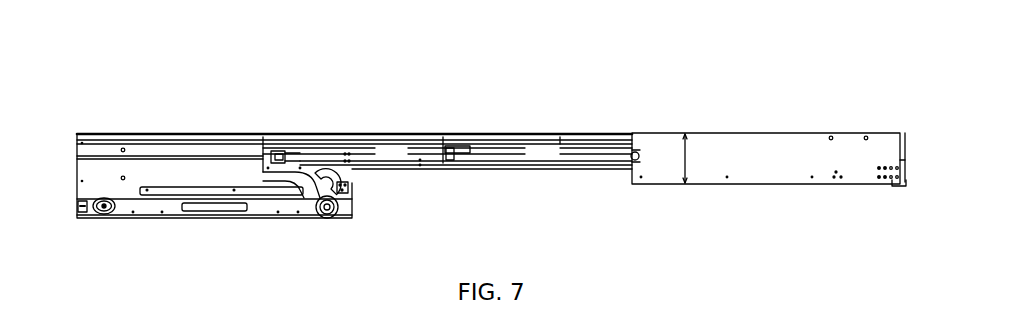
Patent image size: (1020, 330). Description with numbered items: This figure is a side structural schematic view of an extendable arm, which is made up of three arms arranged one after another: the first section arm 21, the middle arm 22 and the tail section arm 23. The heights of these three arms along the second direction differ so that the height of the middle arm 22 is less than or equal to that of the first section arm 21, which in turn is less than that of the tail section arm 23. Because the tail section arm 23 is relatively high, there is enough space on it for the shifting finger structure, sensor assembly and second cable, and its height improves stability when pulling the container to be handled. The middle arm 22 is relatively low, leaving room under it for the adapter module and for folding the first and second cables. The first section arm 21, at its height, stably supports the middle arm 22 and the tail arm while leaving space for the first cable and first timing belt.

The first section arm 21 is at (368, 139).
The middle arm 22 is at (502, 137).
The tail section arm 23 is at (733, 146).